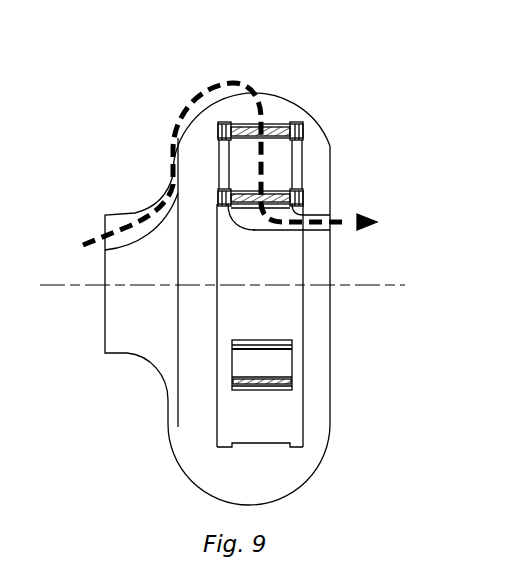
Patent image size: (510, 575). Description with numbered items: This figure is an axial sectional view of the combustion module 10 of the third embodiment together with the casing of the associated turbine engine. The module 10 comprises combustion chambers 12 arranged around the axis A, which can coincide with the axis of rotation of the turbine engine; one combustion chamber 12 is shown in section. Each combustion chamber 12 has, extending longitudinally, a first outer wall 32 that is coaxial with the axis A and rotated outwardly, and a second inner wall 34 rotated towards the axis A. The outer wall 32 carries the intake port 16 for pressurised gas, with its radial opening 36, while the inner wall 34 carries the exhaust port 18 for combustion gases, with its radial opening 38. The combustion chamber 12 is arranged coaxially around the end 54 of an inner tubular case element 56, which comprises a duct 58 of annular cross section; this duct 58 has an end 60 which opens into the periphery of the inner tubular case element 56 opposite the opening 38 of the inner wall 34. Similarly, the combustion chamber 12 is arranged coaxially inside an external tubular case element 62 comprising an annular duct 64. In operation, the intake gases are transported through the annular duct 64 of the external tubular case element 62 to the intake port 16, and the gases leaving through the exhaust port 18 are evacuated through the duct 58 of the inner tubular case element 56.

The combustion module 10 is at (240, 465).
The combustion chamber 12 is at (275, 160).
The intake port 16 is at (288, 108).
The exhaust port 18 is at (237, 208).
The first outer wall 32 is at (172, 147).
The second inner wall 34 is at (290, 180).
The radial opening 36 is at (305, 130).
The radial opening 38 is at (235, 152).
The end of the inner tubular case element 54 is at (262, 237).
The inner tubular case element 56 is at (308, 240).
The duct 58 is at (320, 228).
The end of the duct 60 is at (255, 215).
The external tubular case element 62 is at (258, 64).
The annular duct 64 is at (235, 80).
The axis A is at (55, 283).